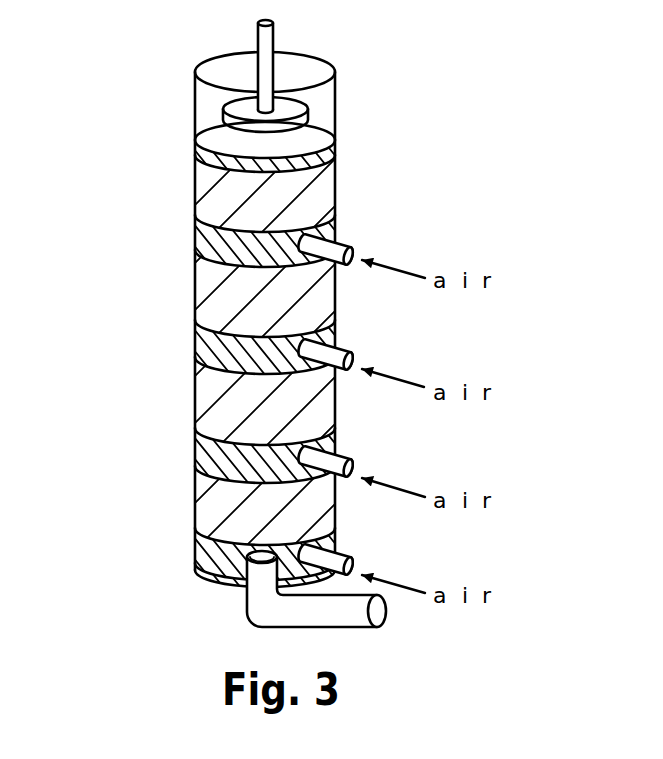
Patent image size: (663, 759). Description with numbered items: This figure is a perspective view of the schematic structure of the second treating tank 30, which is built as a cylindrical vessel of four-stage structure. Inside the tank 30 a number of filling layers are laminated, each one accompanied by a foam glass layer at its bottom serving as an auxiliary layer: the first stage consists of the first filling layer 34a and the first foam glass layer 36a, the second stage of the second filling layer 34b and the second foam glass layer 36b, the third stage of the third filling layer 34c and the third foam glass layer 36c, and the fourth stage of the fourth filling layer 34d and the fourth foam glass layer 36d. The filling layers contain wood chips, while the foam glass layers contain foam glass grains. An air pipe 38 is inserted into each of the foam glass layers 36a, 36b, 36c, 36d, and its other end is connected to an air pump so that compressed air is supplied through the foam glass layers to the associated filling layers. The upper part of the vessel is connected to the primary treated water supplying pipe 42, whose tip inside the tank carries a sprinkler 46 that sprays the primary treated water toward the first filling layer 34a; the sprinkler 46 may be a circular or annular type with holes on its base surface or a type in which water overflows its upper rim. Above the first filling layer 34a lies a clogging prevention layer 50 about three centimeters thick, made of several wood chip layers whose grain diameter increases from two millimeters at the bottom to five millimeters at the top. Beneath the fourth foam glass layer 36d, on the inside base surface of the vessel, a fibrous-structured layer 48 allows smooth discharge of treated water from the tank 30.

The second treating tank 30 is at (352, 79).
The primary treated water supplying pipe 42 is at (276, 40).
The sprinkler 46 is at (306, 108).
The clogging prevention layer 50 is at (207, 160).
The first filling layer 34a is at (216, 203).
The second filling layer 34b is at (216, 302).
The third filling layer 34c is at (216, 402).
The fourth filling layer 34d is at (216, 500).
The first foam glass layer 36a is at (214, 241).
The second foam glass layer 36b is at (214, 346).
The third foam glass layer 36c is at (214, 449).
The fourth foam glass layer 36d is at (214, 548).
The air pipe 38 is at (330, 239).
The fibrous-structured layer 48 is at (197, 577).